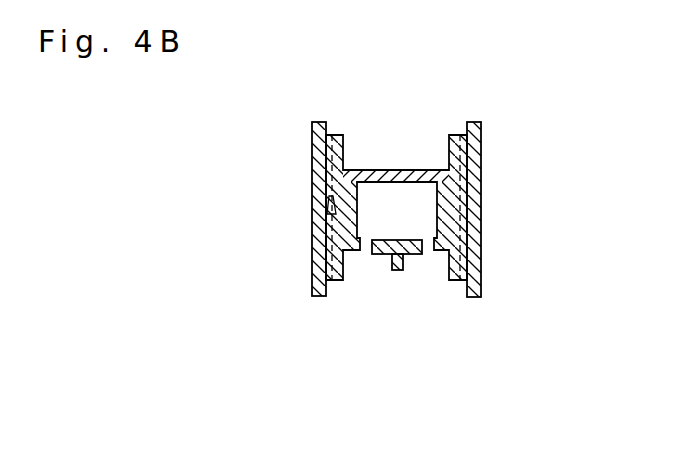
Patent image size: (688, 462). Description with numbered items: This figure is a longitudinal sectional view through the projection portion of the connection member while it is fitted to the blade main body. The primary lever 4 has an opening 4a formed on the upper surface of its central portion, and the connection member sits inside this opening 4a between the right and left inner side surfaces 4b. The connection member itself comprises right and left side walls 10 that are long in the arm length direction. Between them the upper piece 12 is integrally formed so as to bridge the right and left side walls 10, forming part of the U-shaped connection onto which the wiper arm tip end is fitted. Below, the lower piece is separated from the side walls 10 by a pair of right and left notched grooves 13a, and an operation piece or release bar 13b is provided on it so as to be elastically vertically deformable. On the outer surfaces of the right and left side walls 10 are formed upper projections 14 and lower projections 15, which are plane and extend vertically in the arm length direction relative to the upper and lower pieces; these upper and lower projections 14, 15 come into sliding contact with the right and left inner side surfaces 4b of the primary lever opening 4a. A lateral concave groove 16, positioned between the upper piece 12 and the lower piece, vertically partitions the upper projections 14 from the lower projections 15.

The primary lever 4 is at (348, 154).
The opening 4a is at (329, 129).
The right and left inner side surfaces 4b is at (466, 131).
The right and left side walls 10 is at (447, 268).
The upper piece 12 is at (397, 176).
The notched grooves 13a is at (365, 240).
The operation piece (release bar) 13b is at (397, 270).
The upper projections 14 is at (463, 150).
The lower projections 15 is at (463, 255).
The lateral concave groove 16 is at (330, 212).